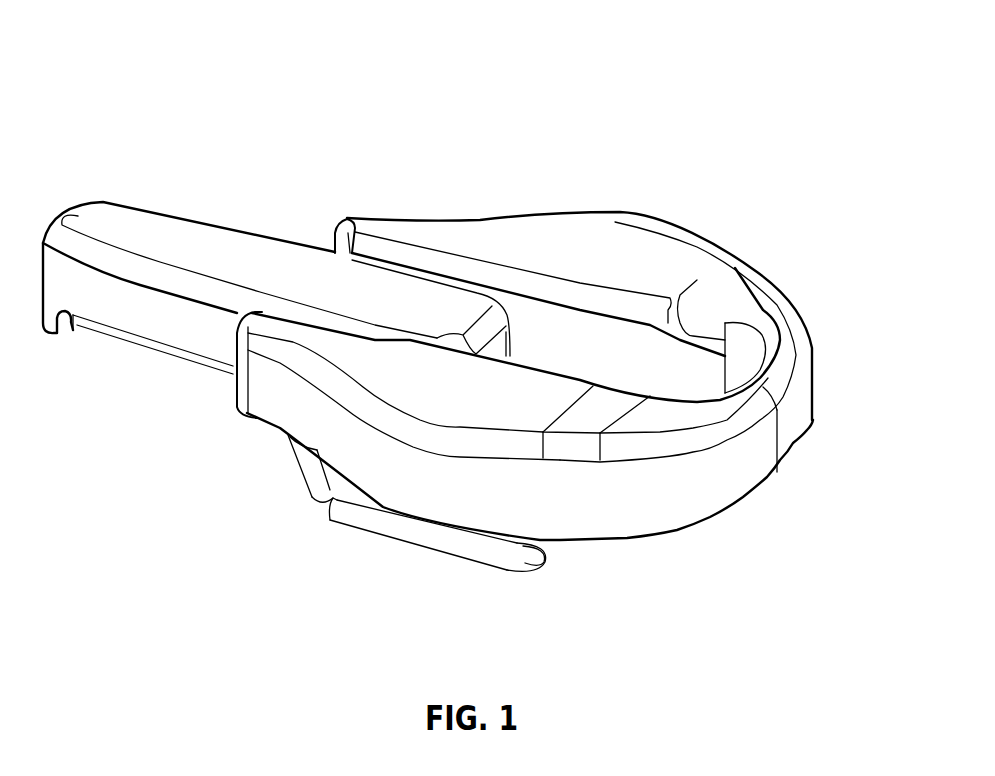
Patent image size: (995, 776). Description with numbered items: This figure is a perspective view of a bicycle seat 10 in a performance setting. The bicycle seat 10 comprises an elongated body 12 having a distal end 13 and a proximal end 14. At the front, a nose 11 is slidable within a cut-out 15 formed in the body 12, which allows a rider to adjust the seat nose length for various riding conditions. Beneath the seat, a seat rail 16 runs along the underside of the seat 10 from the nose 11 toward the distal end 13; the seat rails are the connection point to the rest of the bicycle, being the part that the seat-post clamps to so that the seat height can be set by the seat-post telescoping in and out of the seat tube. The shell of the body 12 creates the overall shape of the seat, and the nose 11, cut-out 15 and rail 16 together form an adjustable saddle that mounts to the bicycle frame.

The bicycle seat 10 is at (616, 141).
The nose 11 is at (97, 221).
The elongated body 12 is at (677, 245).
The distal end 13 is at (790, 430).
The proximal end 14 is at (340, 232).
The cut-out 15 is at (670, 368).
The seat rail 16 is at (322, 505).